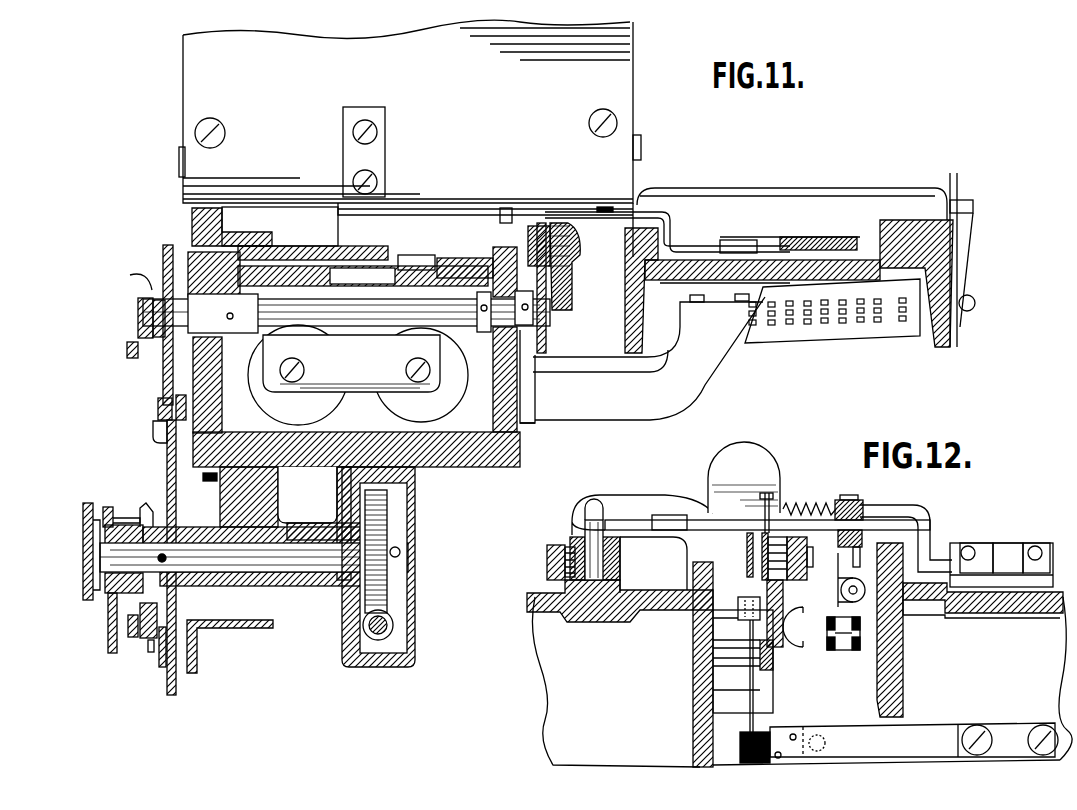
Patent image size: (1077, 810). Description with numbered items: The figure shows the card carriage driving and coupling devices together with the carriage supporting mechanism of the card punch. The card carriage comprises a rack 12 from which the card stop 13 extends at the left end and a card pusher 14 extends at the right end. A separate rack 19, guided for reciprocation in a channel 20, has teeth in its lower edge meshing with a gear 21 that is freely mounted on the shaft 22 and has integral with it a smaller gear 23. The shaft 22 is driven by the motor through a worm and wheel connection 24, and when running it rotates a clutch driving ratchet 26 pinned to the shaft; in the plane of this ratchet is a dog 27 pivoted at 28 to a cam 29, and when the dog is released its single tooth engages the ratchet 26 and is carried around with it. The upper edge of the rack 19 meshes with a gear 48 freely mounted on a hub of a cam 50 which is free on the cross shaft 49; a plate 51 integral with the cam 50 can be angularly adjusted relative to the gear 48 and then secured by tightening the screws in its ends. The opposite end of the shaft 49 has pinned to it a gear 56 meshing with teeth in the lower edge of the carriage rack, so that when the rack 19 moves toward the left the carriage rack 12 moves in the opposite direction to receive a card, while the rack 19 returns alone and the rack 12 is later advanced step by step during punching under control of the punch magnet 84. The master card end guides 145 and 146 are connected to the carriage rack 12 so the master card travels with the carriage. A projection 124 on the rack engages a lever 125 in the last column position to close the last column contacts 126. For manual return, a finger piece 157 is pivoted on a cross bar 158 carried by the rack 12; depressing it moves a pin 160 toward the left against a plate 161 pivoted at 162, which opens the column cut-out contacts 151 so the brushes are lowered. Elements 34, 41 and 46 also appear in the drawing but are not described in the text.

In FIG. 11, the rack 12 is at (540, 235).
In FIG. 12, the rack 12 is at (773, 500).
In FIG. 12, the card stop 13 is at (592, 600).
In FIG. 11, the card pusher 14 is at (406, 256).
In FIG. 11, the rack 19 is at (158, 408).
In FIG. 11, the channel 20 is at (152, 431).
In FIG. 11, the gear 21 is at (166, 462).
In FIG. 11, the shaft 22 is at (283, 558).
In FIG. 11, the smaller gear 23 is at (204, 612).
In FIG. 11, the worm and wheel connection 24 is at (393, 625).
In FIG. 11, the clutch driving ratchet 26 is at (130, 638).
In FIG. 11, the dog 27 is at (153, 652).
In FIG. 11, the pivot 28 is at (125, 522).
In FIG. 11, the cam 29 is at (107, 647).
In FIG. 11, the plate 34 is at (162, 668).
In FIG. 11, the flange 41 is at (82, 522).
In FIG. 11, the spacer 46 is at (146, 640).
In FIG. 11, the gear 48 is at (167, 247).
In FIG. 11, the cross shaft 49 is at (361, 310).
In FIG. 11, the cam 50 is at (150, 302).
In FIG. 11, the plate 51 is at (148, 292).
In FIG. 11, the gear 56 is at (548, 333).
In FIG. 11, the punch magnet 84 is at (386, 400).
In FIG. 12, the projection 124 is at (708, 622).
In FIG. 12, the lever 125 is at (698, 691).
In FIG. 12, the last column contacts 126 is at (813, 727).
In FIG. 11, the end guide 145 is at (663, 212).
In FIG. 12, the end guide 146 is at (925, 548).
In FIG. 12, the column cut-out contacts 151 is at (840, 640).
In FIG. 12, the finger piece 157 is at (752, 468).
In FIG. 12, the cross bar 158 is at (733, 530).
In FIG. 12, the pin 160 is at (862, 540).
In FIG. 12, the plate 161 is at (812, 623).
In FIG. 12, the pivot 162 is at (866, 598).